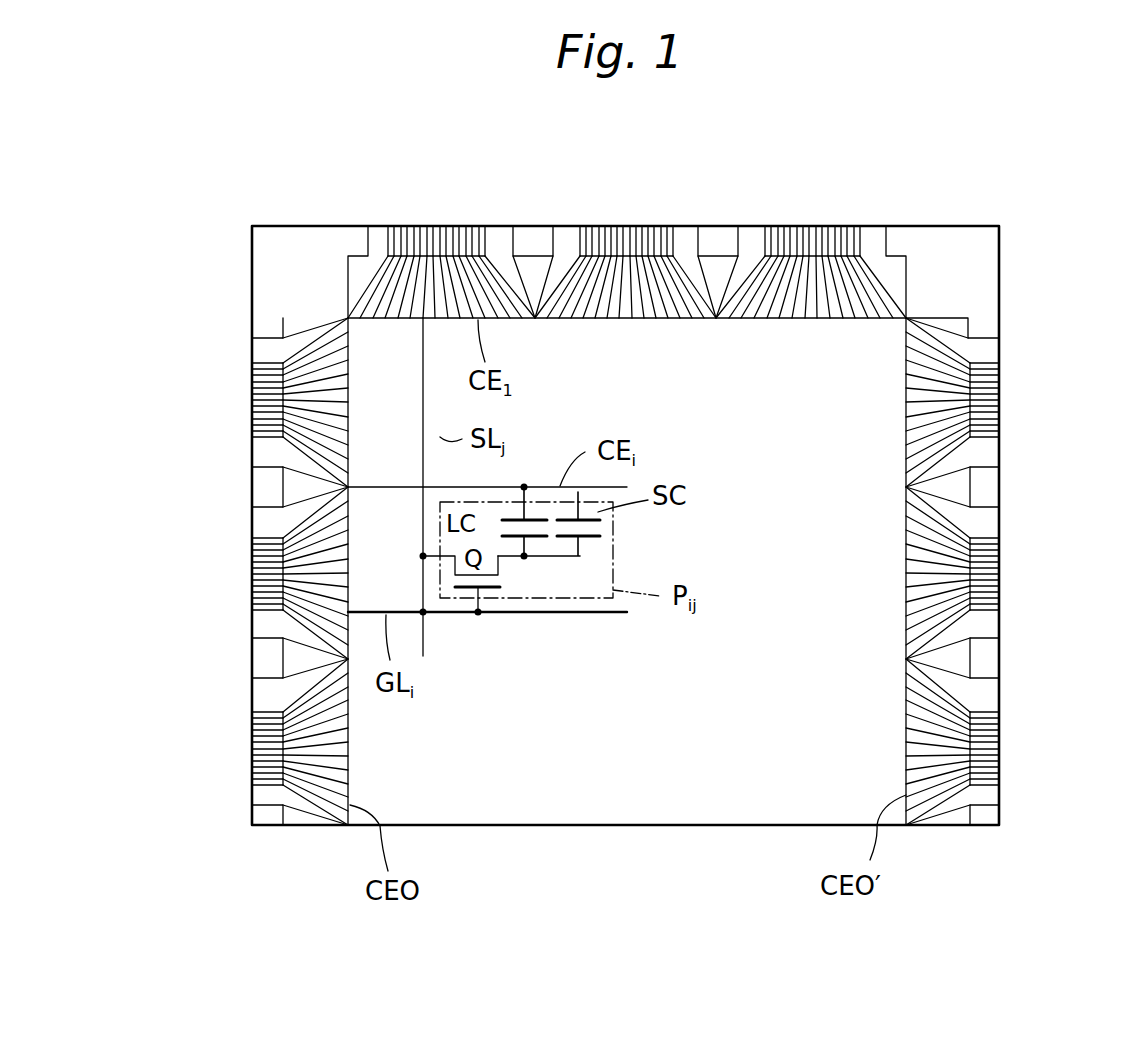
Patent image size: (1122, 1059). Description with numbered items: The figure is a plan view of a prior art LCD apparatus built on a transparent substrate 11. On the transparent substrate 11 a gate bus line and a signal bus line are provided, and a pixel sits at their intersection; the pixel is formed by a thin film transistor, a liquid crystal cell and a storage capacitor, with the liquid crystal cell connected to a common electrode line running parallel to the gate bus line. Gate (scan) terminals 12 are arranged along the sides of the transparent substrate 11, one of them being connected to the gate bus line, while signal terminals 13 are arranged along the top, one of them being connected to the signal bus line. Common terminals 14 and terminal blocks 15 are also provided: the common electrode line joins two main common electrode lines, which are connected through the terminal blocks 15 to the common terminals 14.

The transparent substrate 11 is at (632, 828).
The gate terminals 12 is at (237, 365).
The signal terminals 13 is at (483, 213).
The common terminals 14 is at (362, 226).
The terminal blocks 15 is at (348, 280).